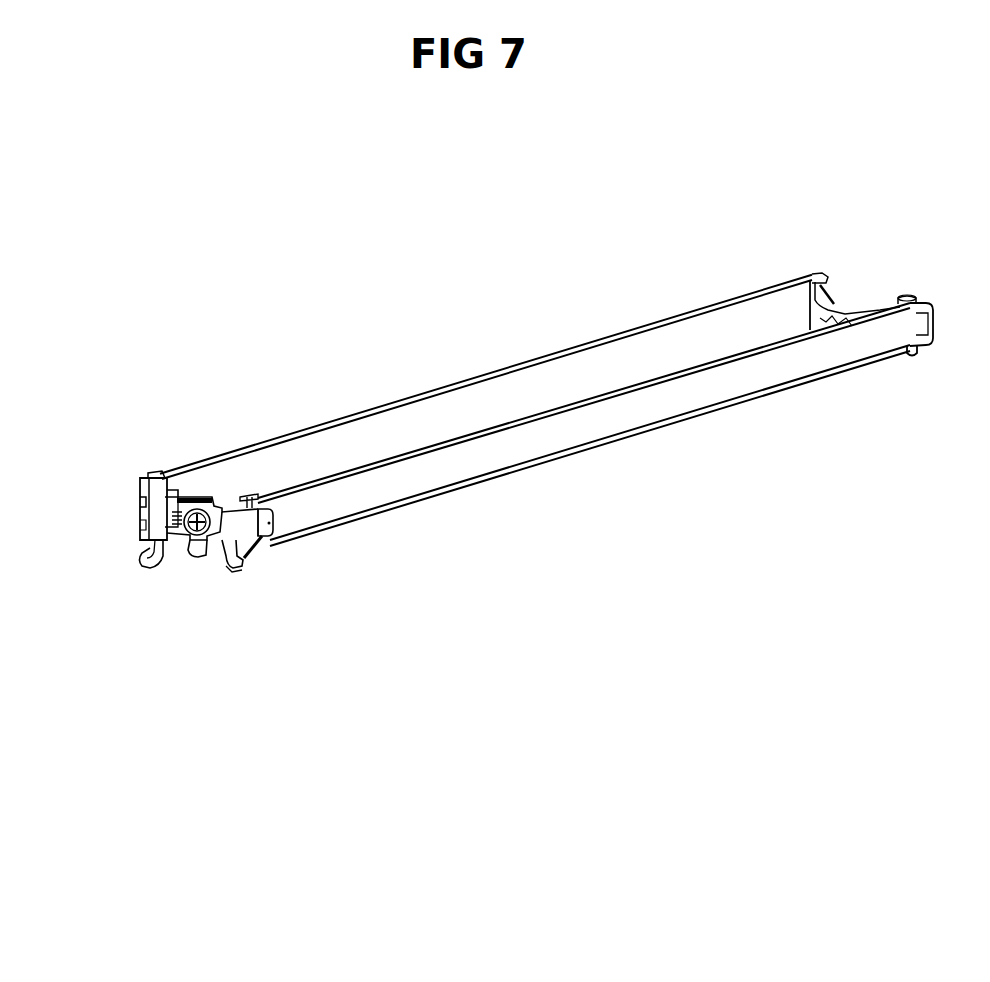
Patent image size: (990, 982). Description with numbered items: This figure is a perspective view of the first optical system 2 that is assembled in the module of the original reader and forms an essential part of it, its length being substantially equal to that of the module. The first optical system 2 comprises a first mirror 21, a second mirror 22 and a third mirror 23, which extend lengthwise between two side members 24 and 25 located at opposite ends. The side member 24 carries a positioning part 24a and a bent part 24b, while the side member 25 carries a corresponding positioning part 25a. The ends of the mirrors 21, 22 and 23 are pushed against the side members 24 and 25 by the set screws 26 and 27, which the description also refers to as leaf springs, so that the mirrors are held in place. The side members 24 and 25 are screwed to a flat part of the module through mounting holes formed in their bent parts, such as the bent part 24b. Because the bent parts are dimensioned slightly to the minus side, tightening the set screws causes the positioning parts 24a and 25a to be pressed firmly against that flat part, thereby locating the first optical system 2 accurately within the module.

The first optical system 2 is at (484, 650).
The first mirror 21 is at (240, 533).
The second mirror 22 is at (304, 428).
The third mirror 23 is at (585, 430).
The side member 24 is at (172, 552).
The positioning part 24a is at (160, 548).
The bent part 24b is at (200, 553).
The side member 25 is at (906, 356).
The positioning part 25a is at (890, 370).
The set screw 26 is at (188, 552).
The set screw 27 is at (853, 300).